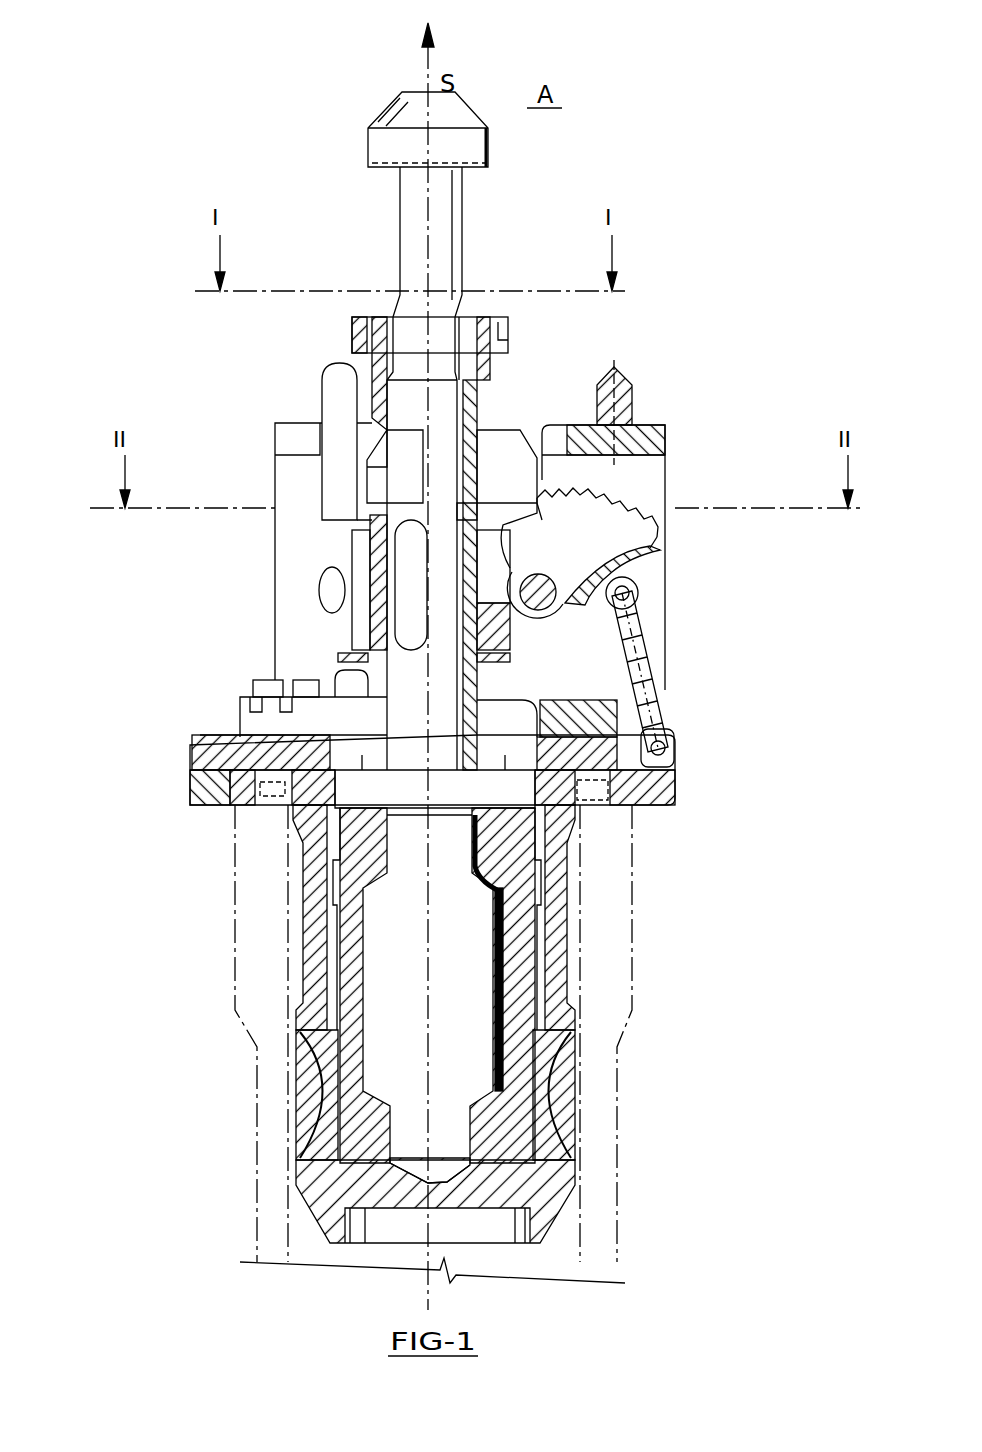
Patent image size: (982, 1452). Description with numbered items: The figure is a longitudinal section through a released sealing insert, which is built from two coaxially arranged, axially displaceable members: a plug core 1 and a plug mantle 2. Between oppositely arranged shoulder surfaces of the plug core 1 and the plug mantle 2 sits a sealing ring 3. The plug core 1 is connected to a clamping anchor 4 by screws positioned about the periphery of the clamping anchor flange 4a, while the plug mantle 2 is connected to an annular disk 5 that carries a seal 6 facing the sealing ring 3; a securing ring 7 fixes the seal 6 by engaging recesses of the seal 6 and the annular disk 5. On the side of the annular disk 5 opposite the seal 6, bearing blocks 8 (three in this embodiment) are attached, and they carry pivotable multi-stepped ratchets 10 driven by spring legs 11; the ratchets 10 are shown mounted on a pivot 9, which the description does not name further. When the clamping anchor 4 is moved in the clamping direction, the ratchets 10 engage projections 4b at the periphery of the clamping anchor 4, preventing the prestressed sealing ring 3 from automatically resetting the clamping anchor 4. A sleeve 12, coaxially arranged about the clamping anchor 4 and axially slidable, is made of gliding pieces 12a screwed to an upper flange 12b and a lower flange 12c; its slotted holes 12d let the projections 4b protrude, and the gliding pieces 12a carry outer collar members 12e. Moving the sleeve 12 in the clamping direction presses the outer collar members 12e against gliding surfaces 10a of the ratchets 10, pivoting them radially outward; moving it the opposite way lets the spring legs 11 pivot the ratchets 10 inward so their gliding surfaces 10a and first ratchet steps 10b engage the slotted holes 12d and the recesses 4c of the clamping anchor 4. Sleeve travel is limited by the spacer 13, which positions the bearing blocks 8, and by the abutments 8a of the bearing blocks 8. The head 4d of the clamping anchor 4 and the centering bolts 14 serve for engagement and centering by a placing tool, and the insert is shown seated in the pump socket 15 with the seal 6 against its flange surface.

The plug core 1 is at (535, 1183).
The plug mantle 2 is at (560, 953).
The sealing ring 3 is at (565, 1082).
The clamping anchor 4 is at (479, 468).
The clamping anchor flange 4a is at (522, 795).
The projections 4b is at (500, 452).
The recesses 4c is at (482, 555).
The head 4d is at (470, 145).
The annular disk 5 is at (372, 814).
The seal 6 is at (236, 800).
The securing ring 7 is at (205, 795).
The bearing blocks 8 is at (271, 580).
The abutments 8a is at (362, 527).
The pin 9 is at (560, 594).
The multi-stepped ratchets 10 is at (659, 524).
The gliding surfaces 10a is at (513, 563).
The first ratchet steps 10b is at (595, 492).
The spring legs 11 is at (648, 652).
The sleeve 12 is at (268, 441).
The gliding pieces 12a is at (322, 398).
The upper flange 12b is at (352, 330).
The lower flange 12c is at (355, 648).
The slotted holes 12d is at (482, 398).
The outer collar members 12e is at (360, 621).
The spacer 13 is at (335, 660).
The centering bolts 14 is at (640, 380).
The pump socket 15 is at (255, 936).